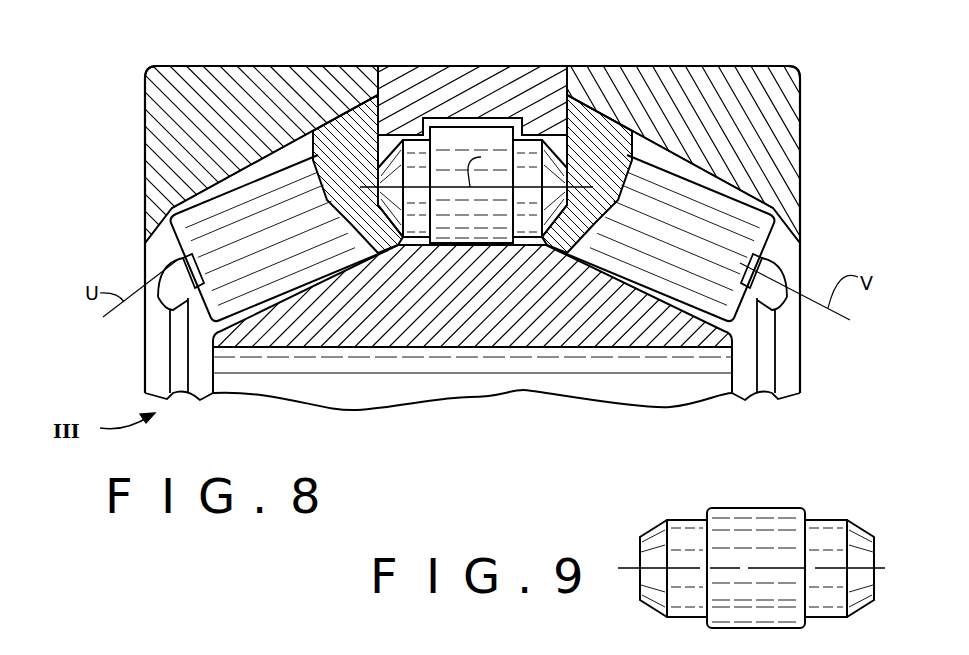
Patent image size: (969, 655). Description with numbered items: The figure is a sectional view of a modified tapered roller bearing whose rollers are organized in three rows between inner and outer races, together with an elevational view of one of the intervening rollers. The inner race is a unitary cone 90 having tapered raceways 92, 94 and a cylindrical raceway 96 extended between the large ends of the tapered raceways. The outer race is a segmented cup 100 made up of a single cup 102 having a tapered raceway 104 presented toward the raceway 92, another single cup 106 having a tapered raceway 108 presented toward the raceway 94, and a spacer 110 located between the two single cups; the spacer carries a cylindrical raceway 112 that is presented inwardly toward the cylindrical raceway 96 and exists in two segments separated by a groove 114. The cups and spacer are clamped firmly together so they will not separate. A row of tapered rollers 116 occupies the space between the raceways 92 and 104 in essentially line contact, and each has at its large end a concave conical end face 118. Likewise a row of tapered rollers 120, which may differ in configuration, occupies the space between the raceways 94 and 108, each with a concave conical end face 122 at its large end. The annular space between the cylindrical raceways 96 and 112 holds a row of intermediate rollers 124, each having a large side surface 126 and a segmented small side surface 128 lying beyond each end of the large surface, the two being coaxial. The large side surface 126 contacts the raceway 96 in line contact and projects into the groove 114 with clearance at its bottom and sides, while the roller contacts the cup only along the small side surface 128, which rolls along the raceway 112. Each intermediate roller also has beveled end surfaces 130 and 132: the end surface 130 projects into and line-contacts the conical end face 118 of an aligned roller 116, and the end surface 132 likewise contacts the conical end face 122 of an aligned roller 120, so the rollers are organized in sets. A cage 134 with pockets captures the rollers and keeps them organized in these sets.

In FIG. 8, the cone 90 is at (367, 310).
In FIG. 8, the tapered raceway 92 is at (318, 262).
In FIG. 8, the tapered raceway 94 is at (640, 262).
In FIG. 8, the cylindrical raceway 96 is at (454, 237).
In FIG. 8, the segmented cup 100 is at (772, 66).
In FIG. 8, the single cup 102 is at (207, 90).
In FIG. 8, the tapered raceway 104 is at (245, 190).
In FIG. 8, the single cup 106 is at (777, 83).
In FIG. 8, the tapered raceway 108 is at (740, 185).
In FIG. 8, the spacer 110 is at (420, 77).
In FIG. 8, the cylindrical raceway 112 is at (393, 81).
In FIG. 8, the groove 114 is at (490, 130).
In FIG. 8, the tapered rollers 116 is at (205, 221).
In FIG. 8, the conical end face 118 is at (360, 187).
In FIG. 8, the tapered rollers 120 is at (720, 190).
In FIG. 8, the conical end face 122 is at (667, 68).
In FIG. 8, the intermediate roller 124 is at (445, 131).
In FIG. 9, the intermediate roller 124 is at (876, 556).
In FIG. 8, the large side surface 126 is at (487, 143).
In FIG. 9, the large side surface 126 is at (760, 512).
In FIG. 8, the small side surface 128 is at (420, 213).
In FIG. 9, the small side surface 128 is at (677, 620).
In FIG. 8, the beveled end surface 130 is at (300, 268).
In FIG. 9, the beveled end surface 130 is at (655, 527).
In FIG. 8, the beveled end surface 132 is at (560, 200).
In FIG. 9, the beveled end surface 132 is at (862, 528).
In FIG. 8, the cage 134 is at (168, 310).